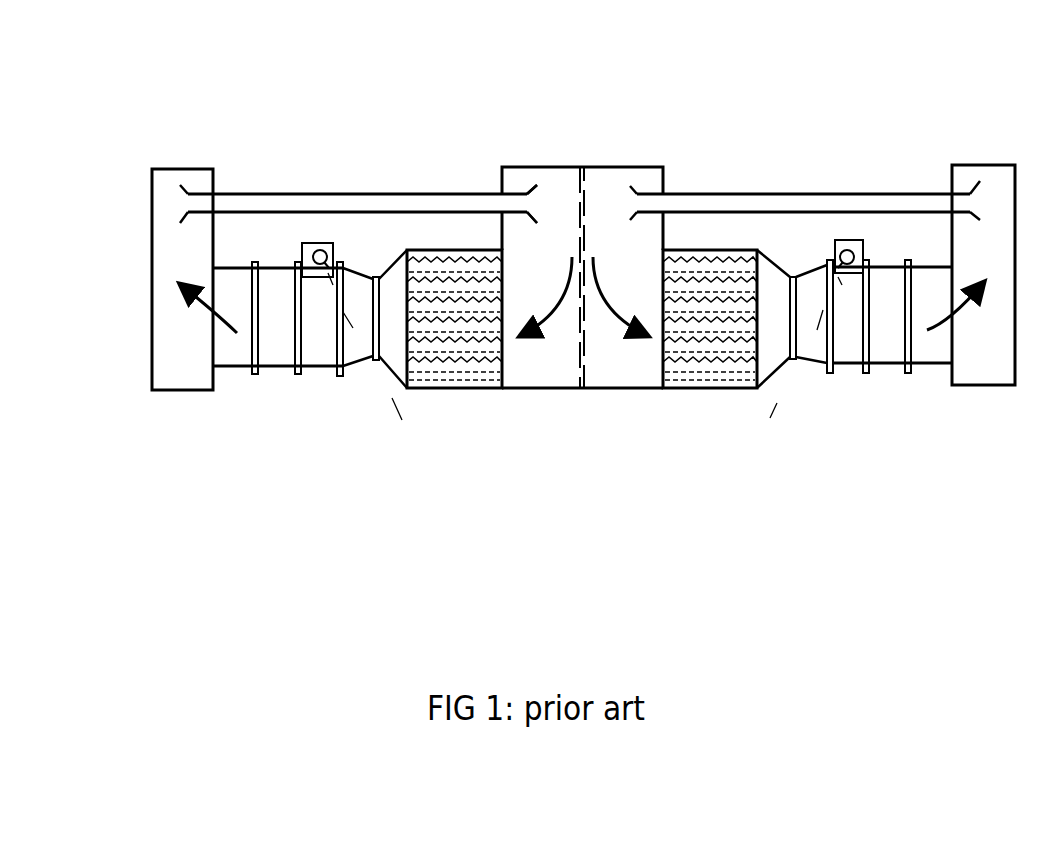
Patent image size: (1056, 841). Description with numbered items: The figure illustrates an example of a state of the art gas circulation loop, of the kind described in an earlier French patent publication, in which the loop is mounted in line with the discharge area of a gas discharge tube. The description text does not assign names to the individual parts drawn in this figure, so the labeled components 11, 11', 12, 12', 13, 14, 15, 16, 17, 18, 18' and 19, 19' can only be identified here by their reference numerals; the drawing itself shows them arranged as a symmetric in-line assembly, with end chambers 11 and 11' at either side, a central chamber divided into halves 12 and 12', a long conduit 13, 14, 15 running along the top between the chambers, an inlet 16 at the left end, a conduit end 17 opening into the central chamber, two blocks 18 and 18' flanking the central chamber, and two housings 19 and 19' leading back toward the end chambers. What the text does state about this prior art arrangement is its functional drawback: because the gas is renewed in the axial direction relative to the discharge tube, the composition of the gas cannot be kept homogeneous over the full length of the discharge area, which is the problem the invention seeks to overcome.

The inlet chamber 11 is at (168, 232).
The outlet chamber 11' is at (986, 224).
The central chamber (first half) 12 is at (542, 225).
The central chamber (second half) 12' is at (622, 223).
The conduit 13 is at (584, 149).
The conduit 14 is at (584, 149).
The conduit 15 is at (337, 194).
The inlet 16 is at (186, 190).
The conduit outlet end 17 is at (535, 188).
The catalyst block 18 is at (454, 374).
The catalyst block 18' is at (697, 384).
The housing with flow meter 19 is at (310, 359).
The housing with flow meter 19' is at (854, 370).